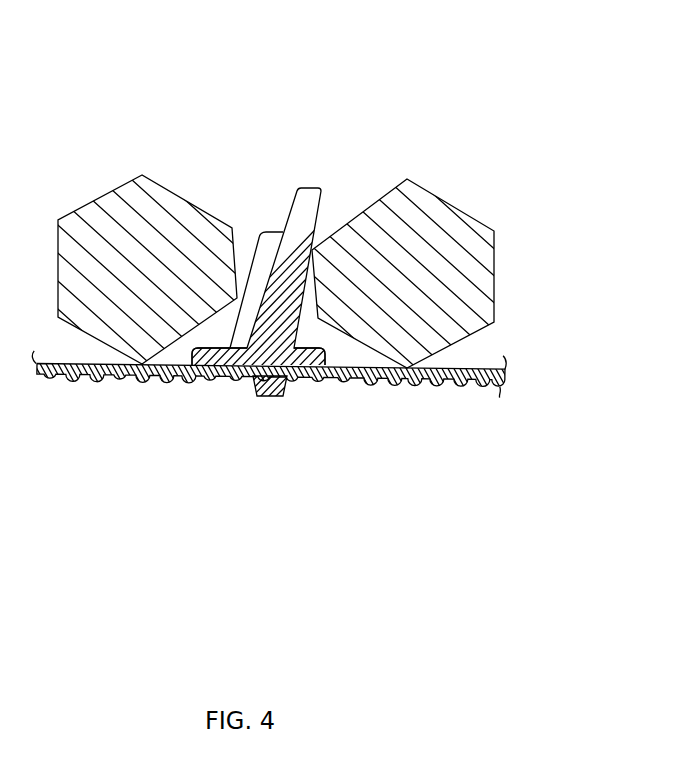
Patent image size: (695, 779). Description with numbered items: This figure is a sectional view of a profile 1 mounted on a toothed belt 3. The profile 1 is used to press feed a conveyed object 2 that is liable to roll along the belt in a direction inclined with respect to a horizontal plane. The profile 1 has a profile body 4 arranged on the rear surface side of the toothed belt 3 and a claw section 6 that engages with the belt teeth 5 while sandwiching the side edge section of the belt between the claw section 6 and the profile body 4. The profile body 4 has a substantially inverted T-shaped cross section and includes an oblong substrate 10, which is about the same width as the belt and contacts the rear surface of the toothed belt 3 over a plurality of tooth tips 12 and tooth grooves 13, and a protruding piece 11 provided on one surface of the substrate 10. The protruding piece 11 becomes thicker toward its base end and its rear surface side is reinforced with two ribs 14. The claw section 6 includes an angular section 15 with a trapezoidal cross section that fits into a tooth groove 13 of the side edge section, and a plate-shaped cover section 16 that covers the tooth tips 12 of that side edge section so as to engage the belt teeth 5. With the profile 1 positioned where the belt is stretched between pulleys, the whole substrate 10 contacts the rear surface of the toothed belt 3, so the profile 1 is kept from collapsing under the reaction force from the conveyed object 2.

The profile 1 is at (322, 110).
The conveyed object 2 is at (442, 225).
The toothed belt 3 is at (483, 368).
The profile body 4 is at (252, 264).
The belt teeth 5 is at (423, 393).
The claw section 6 is at (267, 402).
The substrate 10 is at (200, 375).
The protruding piece 11 is at (314, 190).
The tooth tips 12 is at (460, 386).
The tooth groove 13 is at (471, 386).
The ribs 14 is at (271, 243).
The angular section 15 is at (271, 394).
The cover section 16 is at (257, 390).